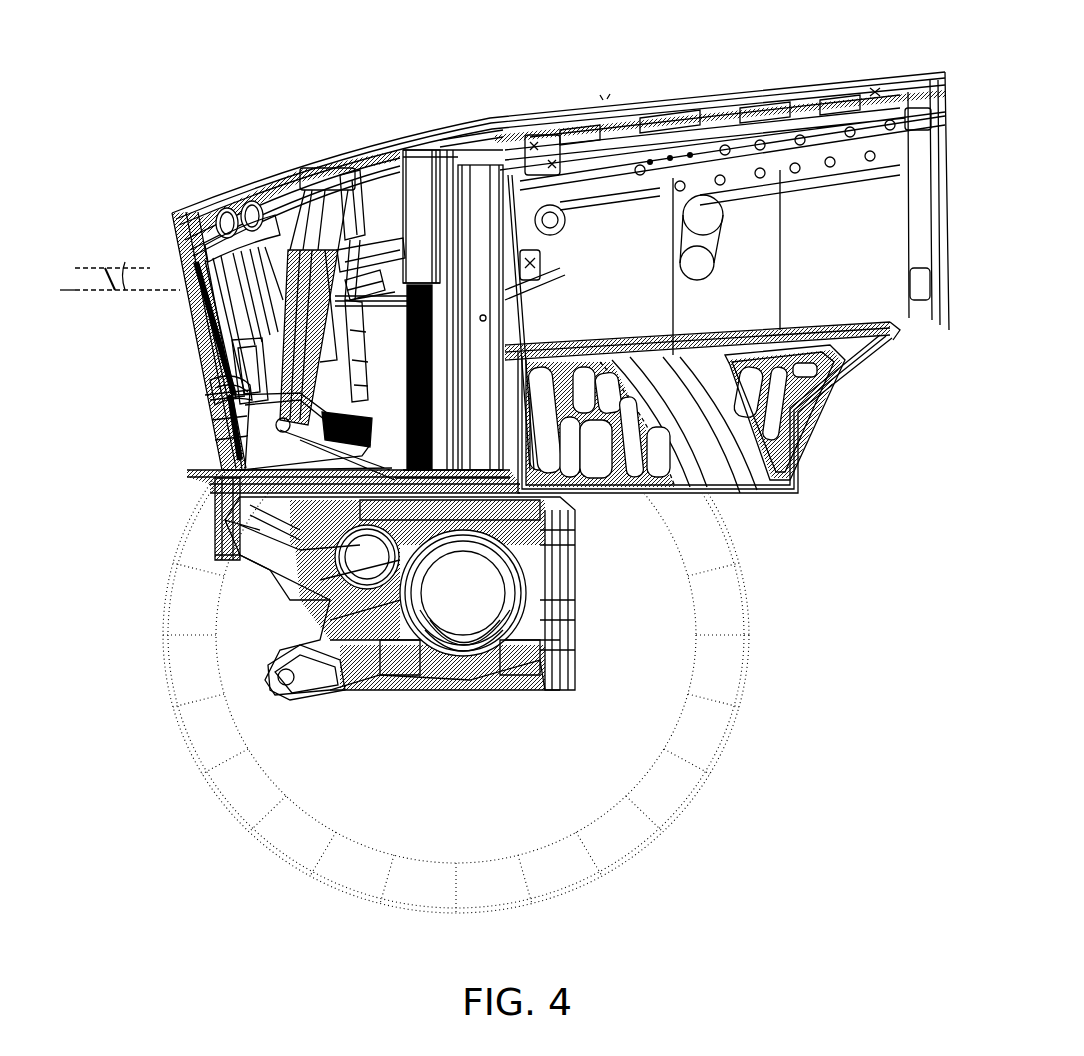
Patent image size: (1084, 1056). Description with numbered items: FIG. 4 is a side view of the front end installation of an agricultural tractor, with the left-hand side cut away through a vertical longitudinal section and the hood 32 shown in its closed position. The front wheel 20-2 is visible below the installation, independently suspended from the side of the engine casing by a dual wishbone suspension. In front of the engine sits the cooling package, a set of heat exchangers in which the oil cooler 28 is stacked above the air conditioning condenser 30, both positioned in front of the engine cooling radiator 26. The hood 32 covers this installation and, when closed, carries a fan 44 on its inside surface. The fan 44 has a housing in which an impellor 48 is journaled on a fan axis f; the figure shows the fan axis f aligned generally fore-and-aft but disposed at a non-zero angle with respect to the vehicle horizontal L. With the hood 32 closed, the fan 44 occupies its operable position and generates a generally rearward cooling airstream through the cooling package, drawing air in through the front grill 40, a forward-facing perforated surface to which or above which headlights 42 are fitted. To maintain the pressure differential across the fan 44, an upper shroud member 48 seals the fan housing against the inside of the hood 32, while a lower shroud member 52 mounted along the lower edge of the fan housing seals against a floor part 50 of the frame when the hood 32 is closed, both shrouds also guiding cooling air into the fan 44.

The front wheel 20-2 is at (240, 827).
The engine cooling radiator 26 is at (487, 120).
The oil cooler 28 is at (430, 167).
The air conditioning condenser 30 is at (408, 372).
The hood 32 is at (722, 90).
The front grill 40 is at (183, 333).
The headlights 42 is at (217, 183).
The fan 44 is at (321, 173).
The impellor / upper shroud member 48 is at (287, 187).
The floor part 50 is at (215, 500).
The lower shroud member 52 is at (213, 467).
The fan axis f is at (85, 270).
The vehicle horizontal L is at (72, 292).